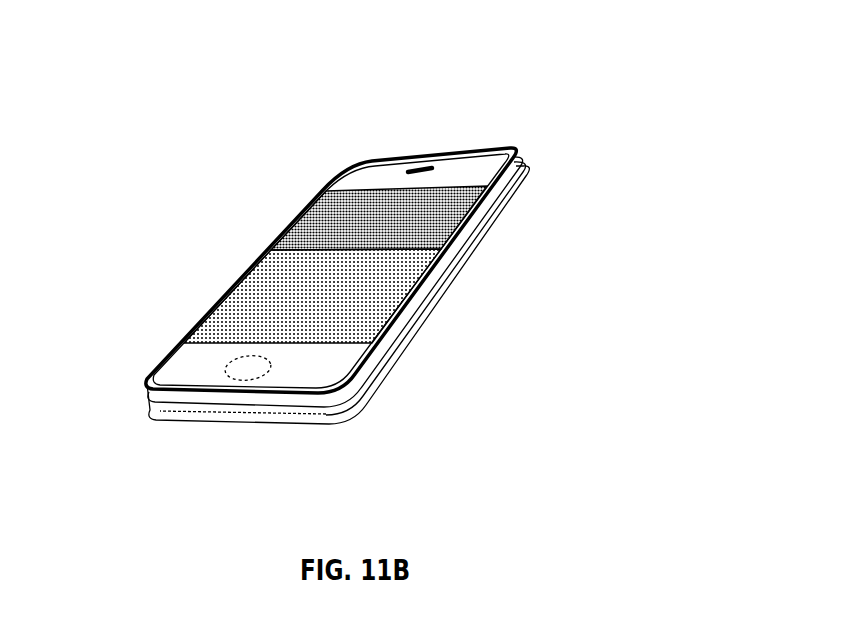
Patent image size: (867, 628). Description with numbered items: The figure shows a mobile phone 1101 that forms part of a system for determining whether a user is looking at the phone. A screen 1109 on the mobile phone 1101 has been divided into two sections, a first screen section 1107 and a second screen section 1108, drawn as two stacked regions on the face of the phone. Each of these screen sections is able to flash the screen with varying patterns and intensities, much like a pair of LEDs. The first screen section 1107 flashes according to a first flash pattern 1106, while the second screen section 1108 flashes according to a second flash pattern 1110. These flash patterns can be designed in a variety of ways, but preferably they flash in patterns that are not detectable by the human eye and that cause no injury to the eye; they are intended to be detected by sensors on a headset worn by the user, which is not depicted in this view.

The mobile phone 1101 is at (513, 208).
The screen 1109 is at (467, 182).
The first screen section 1107 is at (302, 212).
The Flash Pattern 1 1106 is at (397, 216).
The second screen section 1108 is at (223, 293).
The Flash Pattern 2 1110 is at (326, 300).